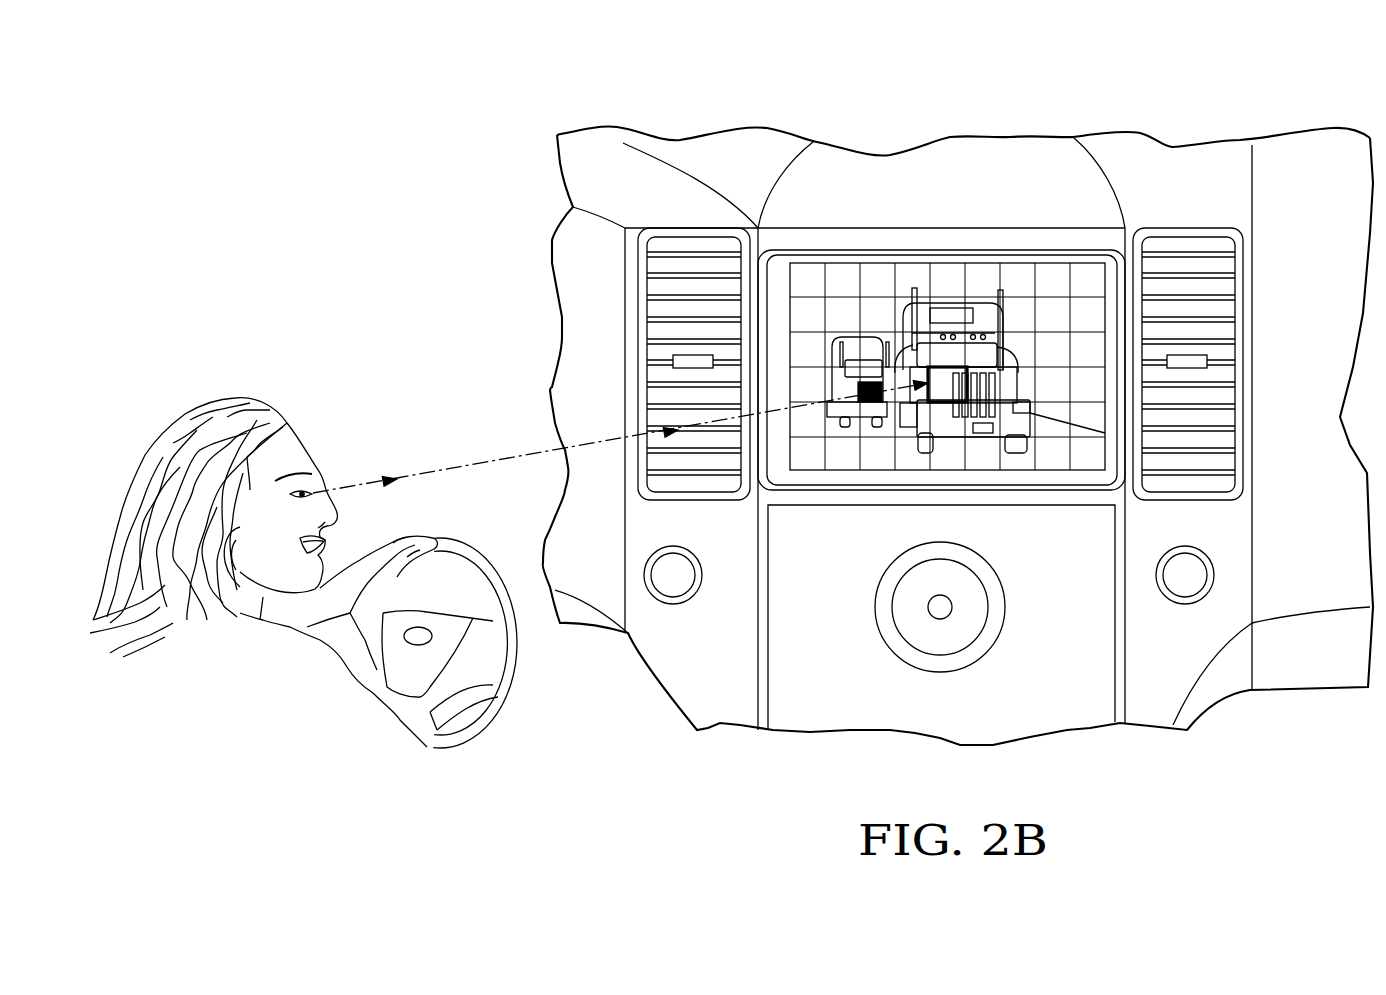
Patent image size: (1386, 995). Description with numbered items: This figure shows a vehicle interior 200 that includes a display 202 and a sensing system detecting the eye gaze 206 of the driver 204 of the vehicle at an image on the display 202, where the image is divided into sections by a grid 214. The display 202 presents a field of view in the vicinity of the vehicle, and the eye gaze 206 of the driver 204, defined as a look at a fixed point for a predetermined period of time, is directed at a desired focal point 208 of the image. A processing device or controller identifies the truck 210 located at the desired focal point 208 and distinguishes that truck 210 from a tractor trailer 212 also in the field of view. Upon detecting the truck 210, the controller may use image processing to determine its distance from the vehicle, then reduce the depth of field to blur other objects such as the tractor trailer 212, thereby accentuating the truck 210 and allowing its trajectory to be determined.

The vehicle interior 200 is at (1050, 88).
The display 202 is at (1112, 277).
The driver 204 is at (297, 420).
The eye gaze 206 is at (527, 455).
The desired focal point 208 is at (922, 388).
The truck 210 is at (980, 347).
The tractor trailer 212 is at (845, 340).
The grid 214 is at (1047, 297).